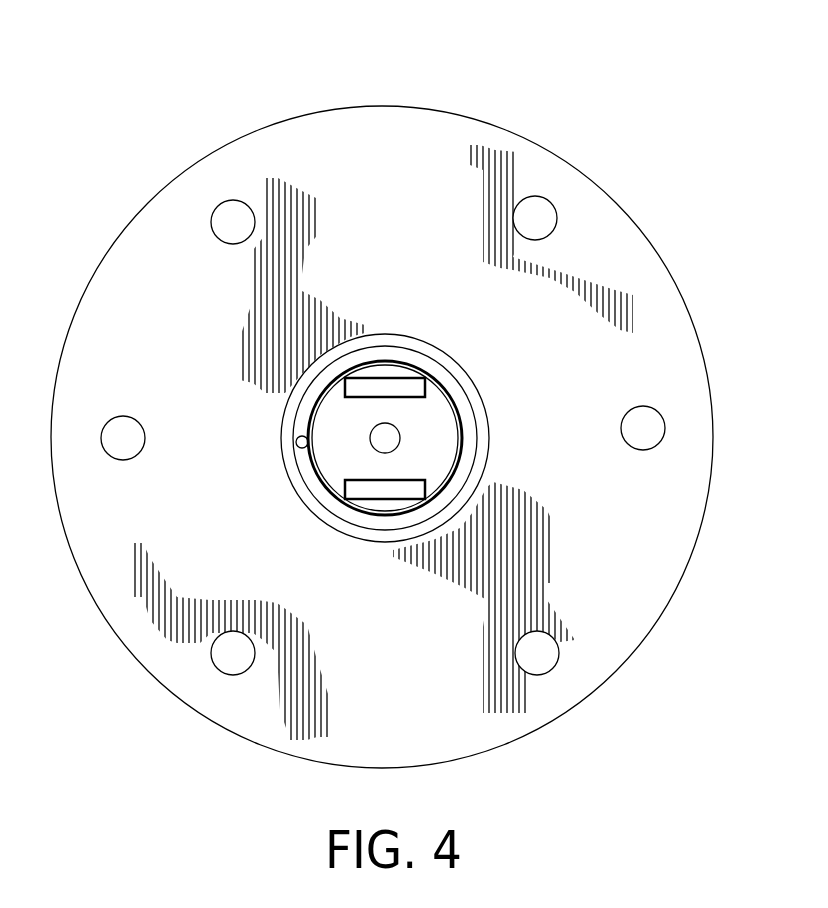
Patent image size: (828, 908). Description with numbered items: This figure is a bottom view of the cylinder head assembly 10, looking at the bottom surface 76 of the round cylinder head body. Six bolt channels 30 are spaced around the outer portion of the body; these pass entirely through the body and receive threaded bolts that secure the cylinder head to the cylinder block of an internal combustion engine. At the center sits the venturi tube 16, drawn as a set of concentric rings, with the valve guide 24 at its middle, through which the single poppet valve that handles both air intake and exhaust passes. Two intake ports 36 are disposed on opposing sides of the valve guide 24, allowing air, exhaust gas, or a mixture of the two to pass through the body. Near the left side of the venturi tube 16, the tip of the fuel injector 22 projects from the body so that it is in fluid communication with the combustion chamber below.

The cylinder head assembly 10 is at (632, 138).
The venturi tube 16 is at (464, 436).
The fuel injector 22 is at (296, 443).
The valve guide 24 is at (371, 441).
The bolt channels 30 is at (213, 213).
The intake ports 36 is at (404, 374).
The bottom surface 76 is at (542, 332).